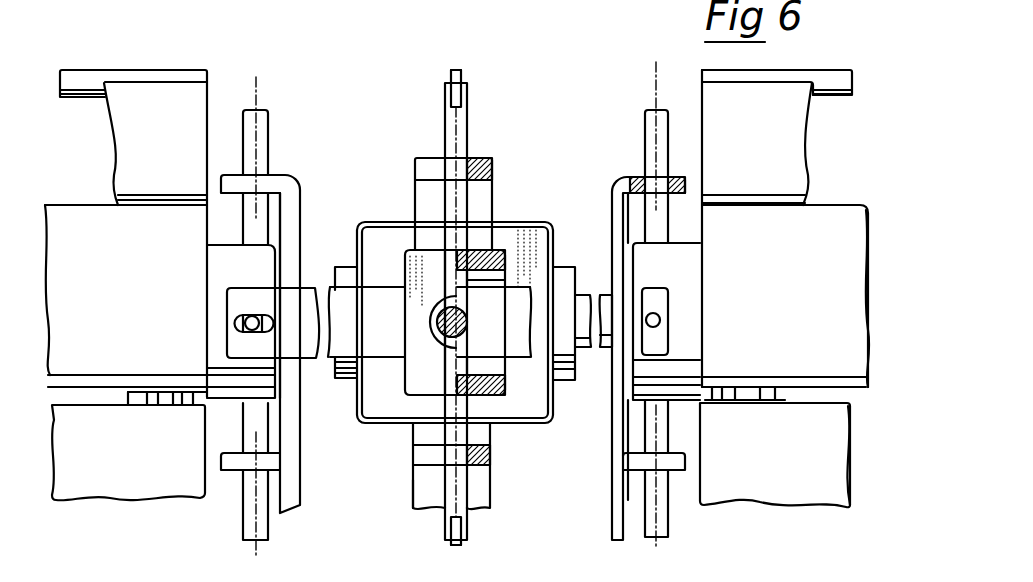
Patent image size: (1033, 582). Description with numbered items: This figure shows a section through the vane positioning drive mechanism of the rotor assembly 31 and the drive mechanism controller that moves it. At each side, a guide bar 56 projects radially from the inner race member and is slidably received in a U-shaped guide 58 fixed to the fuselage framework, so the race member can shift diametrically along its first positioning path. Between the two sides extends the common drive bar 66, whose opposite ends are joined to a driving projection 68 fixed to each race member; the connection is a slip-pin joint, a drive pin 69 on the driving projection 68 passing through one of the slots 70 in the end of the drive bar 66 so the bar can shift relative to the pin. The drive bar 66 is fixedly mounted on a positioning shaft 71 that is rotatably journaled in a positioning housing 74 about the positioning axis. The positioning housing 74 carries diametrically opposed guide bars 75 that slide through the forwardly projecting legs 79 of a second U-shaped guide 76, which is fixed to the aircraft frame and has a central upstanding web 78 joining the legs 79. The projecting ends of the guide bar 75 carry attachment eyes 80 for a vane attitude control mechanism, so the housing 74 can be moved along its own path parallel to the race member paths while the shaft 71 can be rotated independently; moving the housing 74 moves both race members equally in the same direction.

The rotor assembly 31 is at (200, 68).
The guide bars 56 is at (262, 128).
The U-shaped guide 58 is at (302, 206).
The common drive bar 66 is at (372, 295).
The driving projection 68 is at (676, 274).
The drive pin 69 is at (258, 305).
The slots 70 is at (268, 325).
The positioning shaft 71 is at (466, 322).
The positioning housing 74 is at (410, 252).
The guide bars 75 is at (458, 200).
The U-shaped guide 76 is at (420, 490).
The central upstanding web 78 is at (490, 440).
The forwardly projecting legs 79 is at (491, 162).
The attachment eyes 80 is at (462, 80).